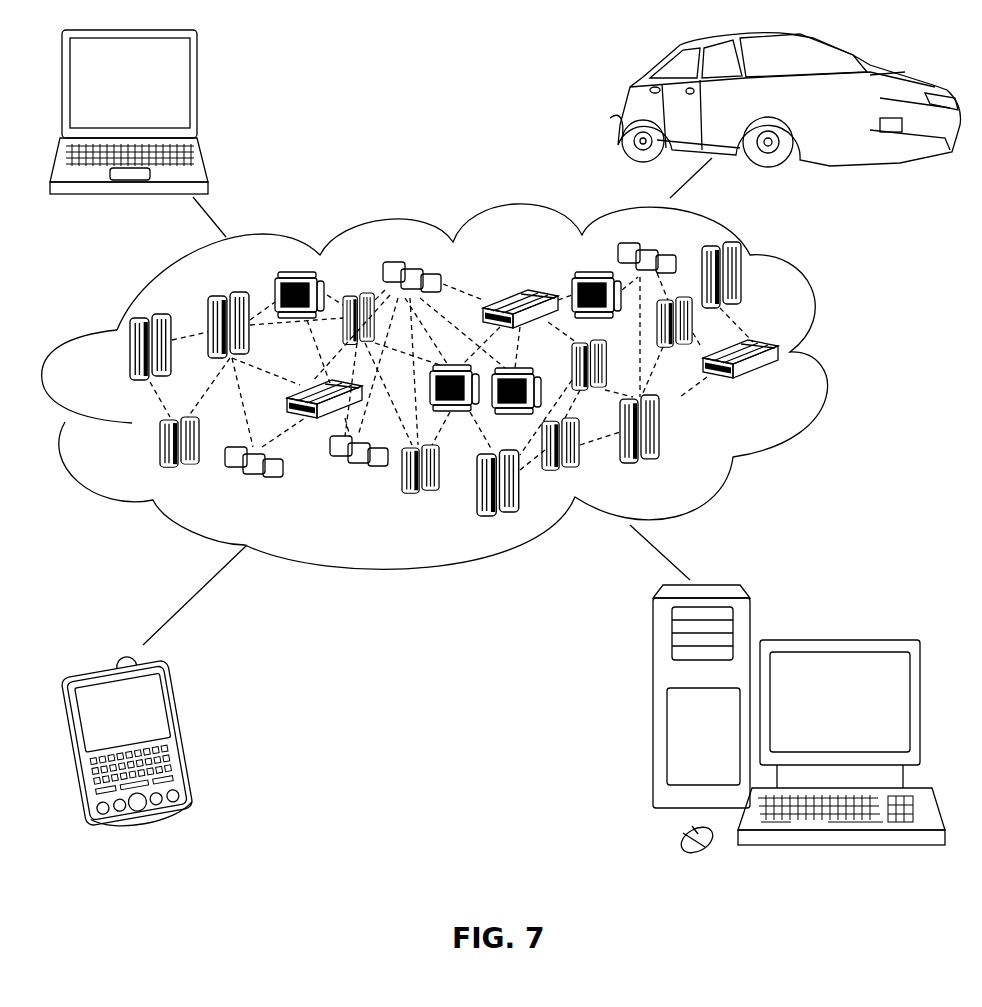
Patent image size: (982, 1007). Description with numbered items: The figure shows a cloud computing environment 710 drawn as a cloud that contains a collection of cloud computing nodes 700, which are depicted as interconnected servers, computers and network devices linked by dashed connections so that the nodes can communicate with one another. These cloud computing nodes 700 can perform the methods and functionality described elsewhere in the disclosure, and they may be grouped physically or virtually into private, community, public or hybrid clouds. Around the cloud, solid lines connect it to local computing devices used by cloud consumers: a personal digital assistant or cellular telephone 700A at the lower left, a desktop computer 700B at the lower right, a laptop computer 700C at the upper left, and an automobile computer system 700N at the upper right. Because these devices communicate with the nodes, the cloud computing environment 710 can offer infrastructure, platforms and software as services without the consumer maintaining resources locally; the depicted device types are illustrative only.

The cloud computing nodes 700 is at (517, 379).
The cloud computing environment 710 is at (838, 357).
The personal digital assistant (PDA) or cellular telephone 700A is at (190, 733).
The desktop computer 700B is at (837, 640).
The laptop computer 700C is at (197, 92).
The automobile computer system 700N is at (623, 112).